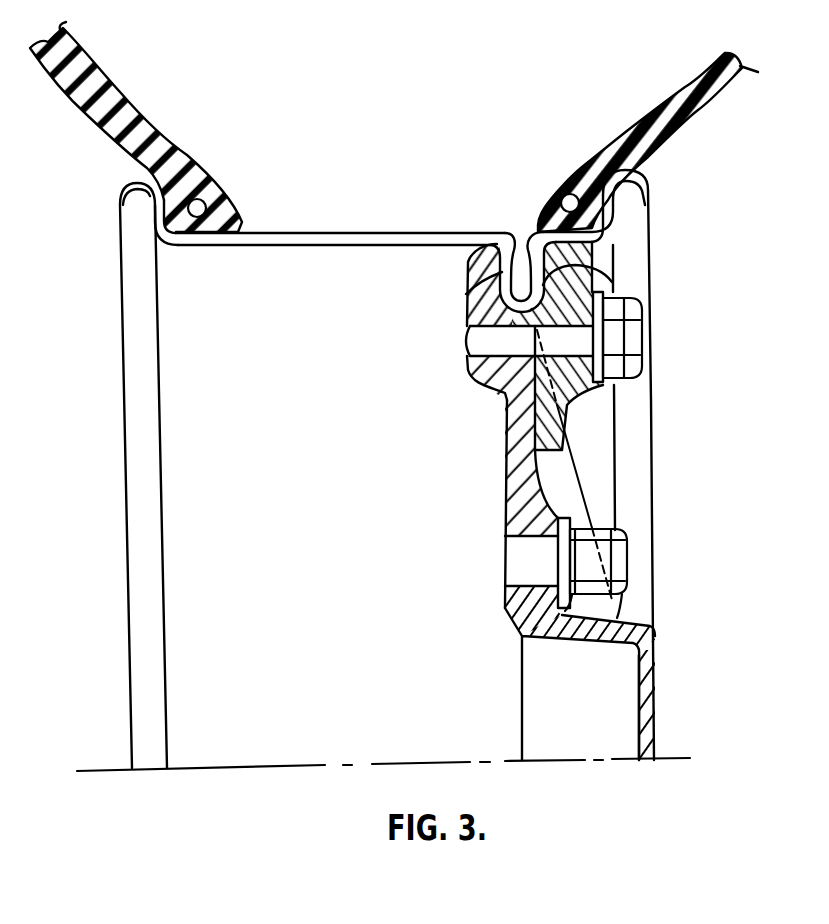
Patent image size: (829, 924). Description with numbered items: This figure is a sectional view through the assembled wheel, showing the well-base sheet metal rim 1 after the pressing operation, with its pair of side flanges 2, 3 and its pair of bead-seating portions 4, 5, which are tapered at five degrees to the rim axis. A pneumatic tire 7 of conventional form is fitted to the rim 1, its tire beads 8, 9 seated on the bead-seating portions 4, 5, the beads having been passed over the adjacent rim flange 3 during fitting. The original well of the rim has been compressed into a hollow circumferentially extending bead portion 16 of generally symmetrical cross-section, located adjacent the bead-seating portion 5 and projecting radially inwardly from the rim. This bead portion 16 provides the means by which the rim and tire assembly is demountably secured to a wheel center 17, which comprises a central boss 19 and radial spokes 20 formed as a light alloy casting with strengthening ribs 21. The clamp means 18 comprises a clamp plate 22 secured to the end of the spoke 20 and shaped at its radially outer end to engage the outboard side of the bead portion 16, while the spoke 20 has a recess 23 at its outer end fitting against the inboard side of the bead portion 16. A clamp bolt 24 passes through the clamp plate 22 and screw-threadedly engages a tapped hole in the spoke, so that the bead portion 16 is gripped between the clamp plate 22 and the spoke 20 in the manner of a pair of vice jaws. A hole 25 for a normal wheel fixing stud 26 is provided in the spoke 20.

The well-base sheet metal rim 1 is at (327, 230).
The side flange 2 is at (126, 186).
The side flange 3 is at (638, 176).
The bead-seating portion 4 is at (212, 248).
The bead-seating portion 5 is at (612, 242).
The pneumatic tire 7 is at (205, 164).
The tire bead 8 is at (205, 208).
The tire bead 9 is at (569, 193).
The bead portion 16 is at (612, 282).
The wheel center 17 is at (505, 609).
The clamp means 18 is at (604, 285).
The central boss 19 is at (638, 640).
The radial spoke 20 is at (512, 502).
The strengthening rib 21 is at (580, 495).
The clamp plate 22 is at (573, 400).
The recess 23 is at (462, 298).
The clamp bolt 24 is at (638, 303).
The hole 25 is at (520, 592).
The wheel fixing stud 26 is at (625, 537).